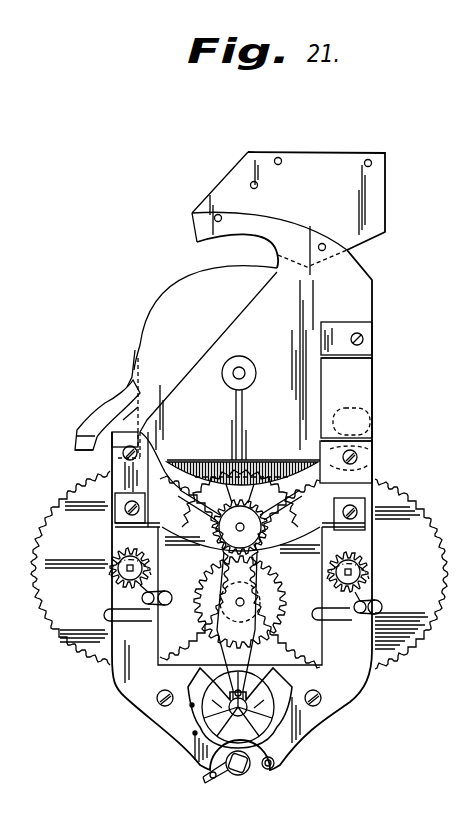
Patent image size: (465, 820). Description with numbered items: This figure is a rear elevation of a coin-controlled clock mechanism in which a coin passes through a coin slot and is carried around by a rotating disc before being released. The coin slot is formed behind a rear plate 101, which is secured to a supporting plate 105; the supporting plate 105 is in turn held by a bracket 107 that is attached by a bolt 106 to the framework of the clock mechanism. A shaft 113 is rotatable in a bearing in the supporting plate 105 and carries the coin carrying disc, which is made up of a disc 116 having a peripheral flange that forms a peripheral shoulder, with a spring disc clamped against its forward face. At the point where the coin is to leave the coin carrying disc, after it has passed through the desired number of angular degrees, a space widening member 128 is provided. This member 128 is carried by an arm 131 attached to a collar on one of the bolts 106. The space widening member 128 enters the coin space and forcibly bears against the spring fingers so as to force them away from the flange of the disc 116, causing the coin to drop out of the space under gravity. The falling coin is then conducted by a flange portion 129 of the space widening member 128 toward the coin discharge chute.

The rear plate 101 is at (343, 162).
The supporting plate 105 is at (362, 300).
The bolt 106 is at (365, 460).
The bracket 107 is at (358, 387).
The shaft 113 is at (239, 373).
The disc 116 is at (153, 328).
The space widening member 128 is at (100, 415).
The flange portion 129 is at (97, 447).
The arm 131 is at (128, 415).